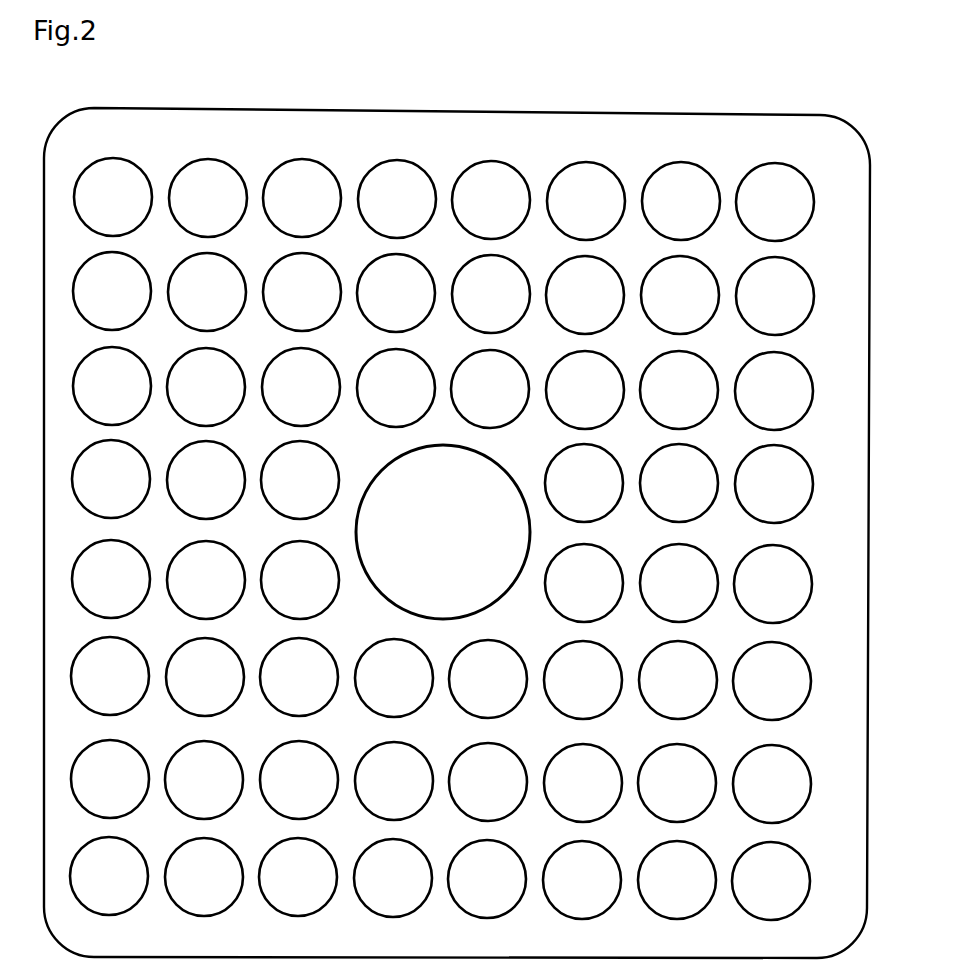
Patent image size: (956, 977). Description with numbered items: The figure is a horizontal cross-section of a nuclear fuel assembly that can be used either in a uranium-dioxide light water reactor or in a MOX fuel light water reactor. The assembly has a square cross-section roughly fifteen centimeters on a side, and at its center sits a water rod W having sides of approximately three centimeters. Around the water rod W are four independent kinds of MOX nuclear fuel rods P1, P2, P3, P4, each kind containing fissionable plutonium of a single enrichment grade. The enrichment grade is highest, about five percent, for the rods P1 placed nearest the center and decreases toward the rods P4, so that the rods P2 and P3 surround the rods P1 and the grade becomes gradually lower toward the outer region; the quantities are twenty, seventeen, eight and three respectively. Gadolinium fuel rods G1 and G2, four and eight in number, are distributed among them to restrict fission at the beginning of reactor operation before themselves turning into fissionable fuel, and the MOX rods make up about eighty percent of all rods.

The water rod W is at (443, 532).
The MOX nuclear fuel rod P1 is at (442, 537).
The MOX nuclear fuel rod P2 is at (442, 539).
The MOX nuclear fuel rod P3 is at (442, 539).
The MOX nuclear fuel rod P4 is at (444, 539).
The gadolinium fuel rod G1 is at (442, 537).
The gadolinium fuel rod G2 is at (442, 537).